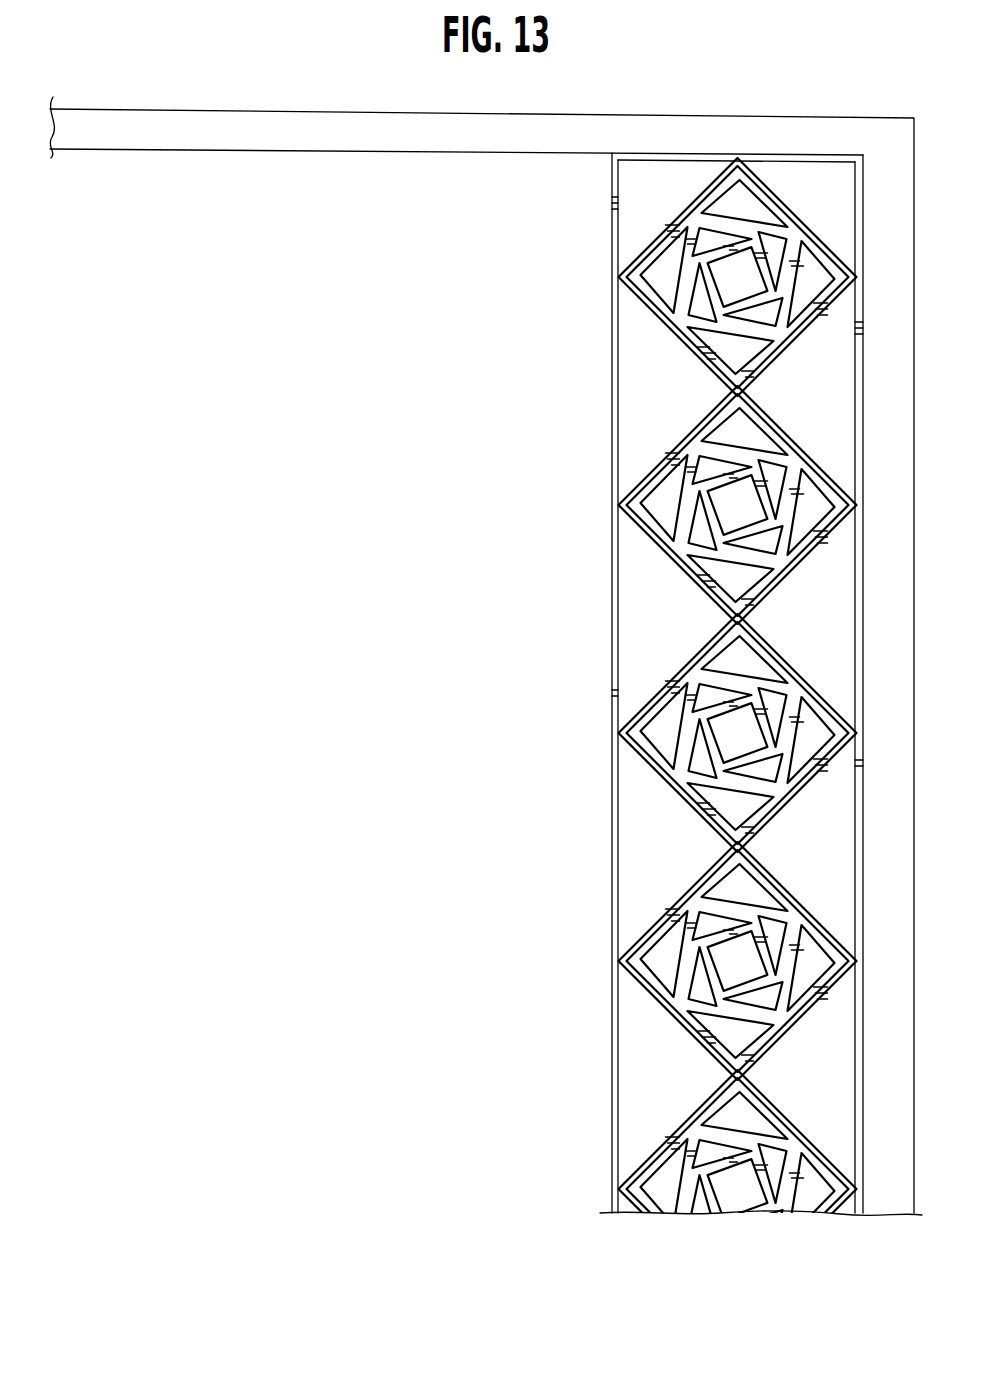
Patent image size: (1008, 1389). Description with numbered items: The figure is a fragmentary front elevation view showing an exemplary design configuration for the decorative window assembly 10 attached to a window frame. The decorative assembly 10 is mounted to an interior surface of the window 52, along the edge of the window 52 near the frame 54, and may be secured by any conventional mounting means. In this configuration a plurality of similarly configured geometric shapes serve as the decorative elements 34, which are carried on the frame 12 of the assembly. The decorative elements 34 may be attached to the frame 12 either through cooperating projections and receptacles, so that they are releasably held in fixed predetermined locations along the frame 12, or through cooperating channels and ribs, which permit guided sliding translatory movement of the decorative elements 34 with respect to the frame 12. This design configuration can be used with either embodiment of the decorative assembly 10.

The frame 54 is at (533, 120).
The window 52 is at (321, 347).
The frame 12 is at (611, 241).
The decorative window assembly 10 is at (674, 733).
The decorative elements 34 is at (650, 533).